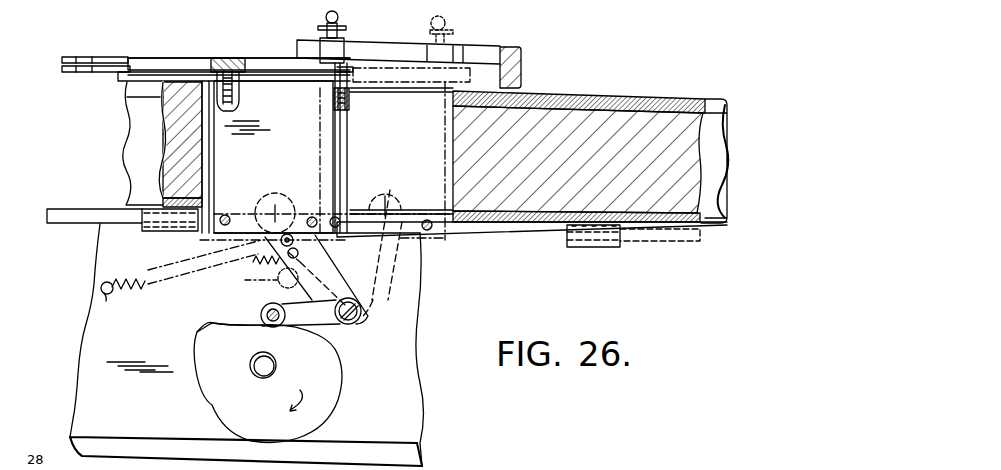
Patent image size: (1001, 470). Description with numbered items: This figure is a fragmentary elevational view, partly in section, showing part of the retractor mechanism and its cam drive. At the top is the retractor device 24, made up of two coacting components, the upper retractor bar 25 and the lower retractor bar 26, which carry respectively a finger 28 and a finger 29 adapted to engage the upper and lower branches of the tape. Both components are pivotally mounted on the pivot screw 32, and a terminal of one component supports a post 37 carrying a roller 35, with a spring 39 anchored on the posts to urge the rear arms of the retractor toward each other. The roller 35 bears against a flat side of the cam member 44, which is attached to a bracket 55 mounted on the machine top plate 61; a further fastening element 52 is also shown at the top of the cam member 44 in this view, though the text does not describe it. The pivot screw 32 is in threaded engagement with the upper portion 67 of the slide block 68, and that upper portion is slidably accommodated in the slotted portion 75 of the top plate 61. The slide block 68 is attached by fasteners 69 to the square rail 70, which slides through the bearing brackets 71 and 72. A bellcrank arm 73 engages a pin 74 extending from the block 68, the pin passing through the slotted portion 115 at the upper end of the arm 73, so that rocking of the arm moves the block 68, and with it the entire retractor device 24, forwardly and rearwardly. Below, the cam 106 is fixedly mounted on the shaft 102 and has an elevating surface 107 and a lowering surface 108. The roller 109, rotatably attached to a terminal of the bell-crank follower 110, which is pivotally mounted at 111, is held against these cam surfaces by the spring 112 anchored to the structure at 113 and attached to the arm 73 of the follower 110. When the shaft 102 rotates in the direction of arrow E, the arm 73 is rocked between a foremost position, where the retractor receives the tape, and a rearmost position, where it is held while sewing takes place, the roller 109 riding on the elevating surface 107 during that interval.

The retractor device 24 is at (181, 50).
The upper retractor bar 25 is at (126, 60).
The lower retractor bar 26 is at (106, 75).
The finger 28 is at (64, 58).
The finger 29 is at (66, 73).
The pivot screw 32 is at (230, 64).
The roller 35 is at (345, 42).
The post 37 is at (320, 31).
The spring 39 is at (338, 24).
The cam member 44 is at (410, 38).
The bolt 52 is at (480, 46).
The bracket 55 is at (522, 56).
The top plate 61 is at (552, 94).
The upper portion of slide block 67 is at (268, 81).
The slide block 68 is at (322, 148).
The fasteners 69 is at (227, 215).
The square rail 70 is at (488, 236).
The bearing bracket 71 is at (170, 230).
The bearing bracket 72 is at (592, 247).
The bellcrank arm 73 is at (326, 258).
The pin 74 is at (276, 207).
The slotted portion 75 is at (430, 155).
The shaft 102 is at (252, 370).
The cam 106 is at (348, 383).
The elevating surface 107 is at (328, 402).
The lowering surface 108 is at (226, 330).
The roller 109 is at (263, 306).
The bell-crank follower 110 is at (348, 276).
The pivot 111 is at (353, 316).
The spring 112 is at (142, 286).
The anchor point 113 is at (106, 294).
The slotted portion 115 is at (262, 243).
The arrow E is at (297, 389).